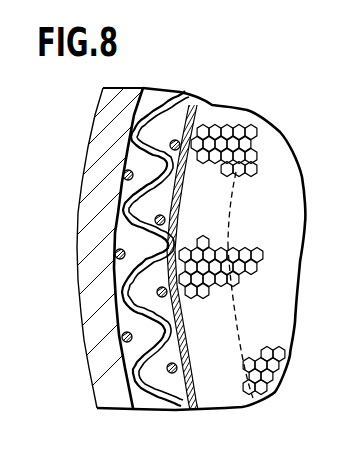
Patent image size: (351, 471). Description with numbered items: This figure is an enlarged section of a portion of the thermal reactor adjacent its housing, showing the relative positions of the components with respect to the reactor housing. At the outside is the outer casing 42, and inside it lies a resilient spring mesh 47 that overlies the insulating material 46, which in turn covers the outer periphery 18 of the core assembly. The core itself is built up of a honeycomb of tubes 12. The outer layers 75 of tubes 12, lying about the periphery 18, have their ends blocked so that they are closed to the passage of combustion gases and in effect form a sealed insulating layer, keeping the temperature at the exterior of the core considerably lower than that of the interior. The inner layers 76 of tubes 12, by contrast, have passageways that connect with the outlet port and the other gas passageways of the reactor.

The tubes 12 is at (248, 148).
The outer periphery 18 is at (210, 105).
The outer casing 42 is at (77, 208).
The insulating material 46 is at (185, 342).
The resilient spring mesh 47 is at (132, 294).
The outer layers 75 is at (218, 172).
The inner layers 76 is at (248, 267).